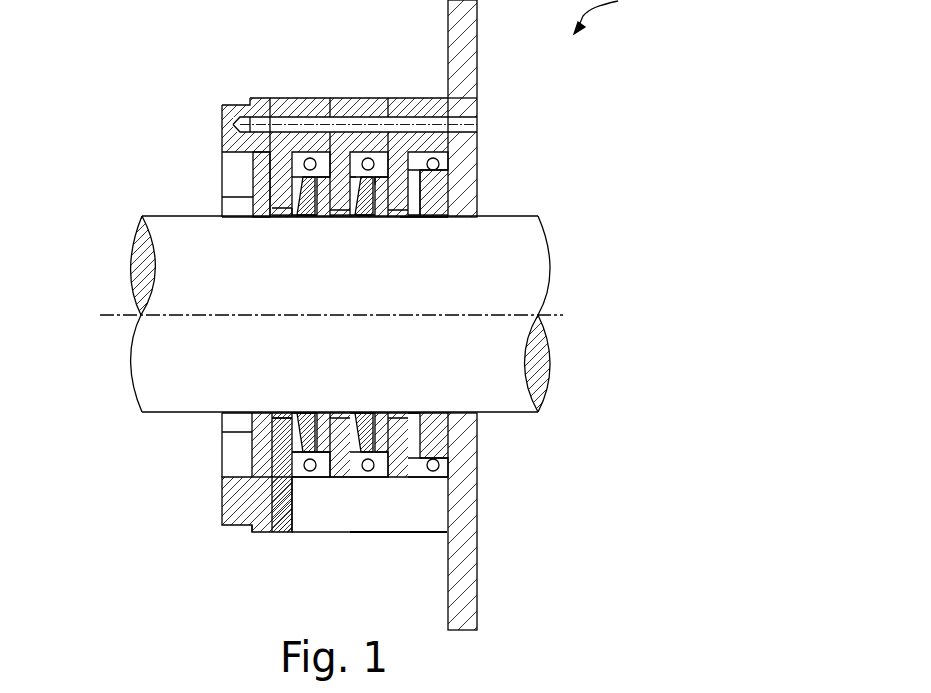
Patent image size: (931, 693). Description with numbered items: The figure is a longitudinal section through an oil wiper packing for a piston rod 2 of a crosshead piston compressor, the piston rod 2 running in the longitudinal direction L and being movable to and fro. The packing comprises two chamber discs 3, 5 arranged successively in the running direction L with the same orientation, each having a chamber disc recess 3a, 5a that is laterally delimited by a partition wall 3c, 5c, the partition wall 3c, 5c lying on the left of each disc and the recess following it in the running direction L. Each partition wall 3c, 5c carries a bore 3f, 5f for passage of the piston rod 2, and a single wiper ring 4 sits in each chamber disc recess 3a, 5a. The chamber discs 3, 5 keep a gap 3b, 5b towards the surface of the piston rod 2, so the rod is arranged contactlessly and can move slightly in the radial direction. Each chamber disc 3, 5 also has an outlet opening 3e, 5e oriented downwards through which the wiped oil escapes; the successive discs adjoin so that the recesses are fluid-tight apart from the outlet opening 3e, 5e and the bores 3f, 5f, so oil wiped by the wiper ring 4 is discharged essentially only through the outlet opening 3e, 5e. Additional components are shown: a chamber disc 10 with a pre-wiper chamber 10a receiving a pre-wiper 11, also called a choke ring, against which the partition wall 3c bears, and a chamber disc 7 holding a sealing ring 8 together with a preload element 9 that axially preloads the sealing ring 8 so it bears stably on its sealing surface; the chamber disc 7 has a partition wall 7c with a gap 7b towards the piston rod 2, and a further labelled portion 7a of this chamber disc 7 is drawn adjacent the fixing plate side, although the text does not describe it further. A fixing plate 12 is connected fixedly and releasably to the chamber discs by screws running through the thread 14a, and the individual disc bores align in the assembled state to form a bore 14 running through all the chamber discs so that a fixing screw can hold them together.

The piston rod 2 is at (528, 277).
The longitudinal direction L is at (548, 315).
The chamber disc 3 is at (318, 105).
The chamber disc recess 3a is at (285, 208).
The gap 3b is at (283, 215).
The partition wall 3c is at (262, 190).
The outlet opening 3e is at (300, 455).
The bore 3f is at (278, 440).
The wiper ring 4 is at (312, 152).
The chamber disc 5 is at (335, 108).
The chamber disc recess 5a is at (352, 180).
The gap 5b is at (342, 217).
The partition wall 5c is at (374, 185).
The outlet opening 5e is at (345, 480).
The bore 5f is at (412, 419).
The chamber disc 7 is at (455, 96).
The wall first side 7a is at (475, 158).
The gap 7b is at (405, 218).
The partition wall 7c is at (405, 484).
The sealing ring 8 is at (440, 170).
The preload element 9 is at (435, 183).
The chamber disc 10 is at (240, 497).
The pre-wiper chamber 10a is at (265, 500).
The pre-wiper 11 is at (254, 418).
The fixing plate 12 is at (460, 590).
The bore 14 is at (477, 120).
The thread 14a is at (255, 117).